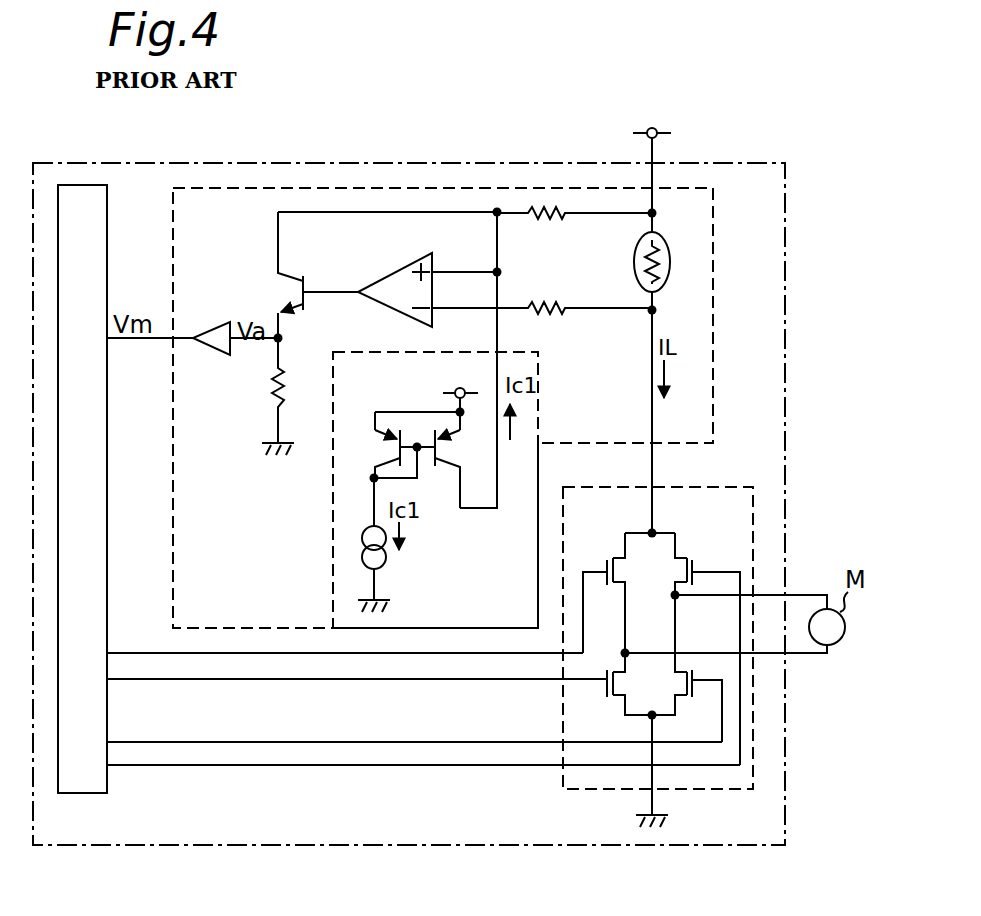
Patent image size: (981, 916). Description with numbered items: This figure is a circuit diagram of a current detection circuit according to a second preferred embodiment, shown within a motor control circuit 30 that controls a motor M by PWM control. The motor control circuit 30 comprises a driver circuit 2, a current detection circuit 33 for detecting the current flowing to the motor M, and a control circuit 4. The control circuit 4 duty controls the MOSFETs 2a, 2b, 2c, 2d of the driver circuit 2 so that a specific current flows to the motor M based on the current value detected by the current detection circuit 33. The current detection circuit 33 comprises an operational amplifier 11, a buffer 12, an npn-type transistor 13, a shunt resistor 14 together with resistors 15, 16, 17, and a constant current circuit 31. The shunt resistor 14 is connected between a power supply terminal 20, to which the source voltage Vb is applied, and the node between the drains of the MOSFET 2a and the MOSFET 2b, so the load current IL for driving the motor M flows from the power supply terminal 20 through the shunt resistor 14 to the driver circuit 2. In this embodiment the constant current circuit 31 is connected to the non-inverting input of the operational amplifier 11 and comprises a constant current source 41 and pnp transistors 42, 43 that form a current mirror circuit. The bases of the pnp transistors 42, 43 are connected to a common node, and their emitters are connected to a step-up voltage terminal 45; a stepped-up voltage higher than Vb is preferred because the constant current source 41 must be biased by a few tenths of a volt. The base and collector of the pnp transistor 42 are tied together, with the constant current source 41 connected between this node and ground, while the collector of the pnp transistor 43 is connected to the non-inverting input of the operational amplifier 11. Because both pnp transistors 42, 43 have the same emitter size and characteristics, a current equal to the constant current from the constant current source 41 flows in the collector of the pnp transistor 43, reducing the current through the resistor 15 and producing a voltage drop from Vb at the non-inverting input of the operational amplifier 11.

The driver circuit 2 is at (560, 701).
The MOSFET 2a is at (607, 566).
The MOSFET 2b is at (694, 566).
The MOSFET 2c is at (607, 690).
The MOSFET 2d is at (694, 690).
The control circuit 4 is at (108, 229).
The operational amplifier 11 is at (386, 304).
The buffer 12 is at (210, 322).
The npn-type transistor 13 is at (300, 281).
The shunt resistor 14 is at (634, 262).
The resistor 15 is at (545, 219).
The resistor 16 is at (548, 314).
The resistor 17 is at (268, 386).
The power supply terminal 20 is at (660, 140).
The motor control circuit 30 is at (476, 158).
The constant current circuit 31 is at (332, 524).
The current detection circuit 33 is at (716, 238).
The constant current source 41 is at (390, 560).
The pnp transistor 42 is at (383, 447).
The pnp transistor 43 is at (460, 450).
The step-up voltage terminal 45 is at (445, 404).